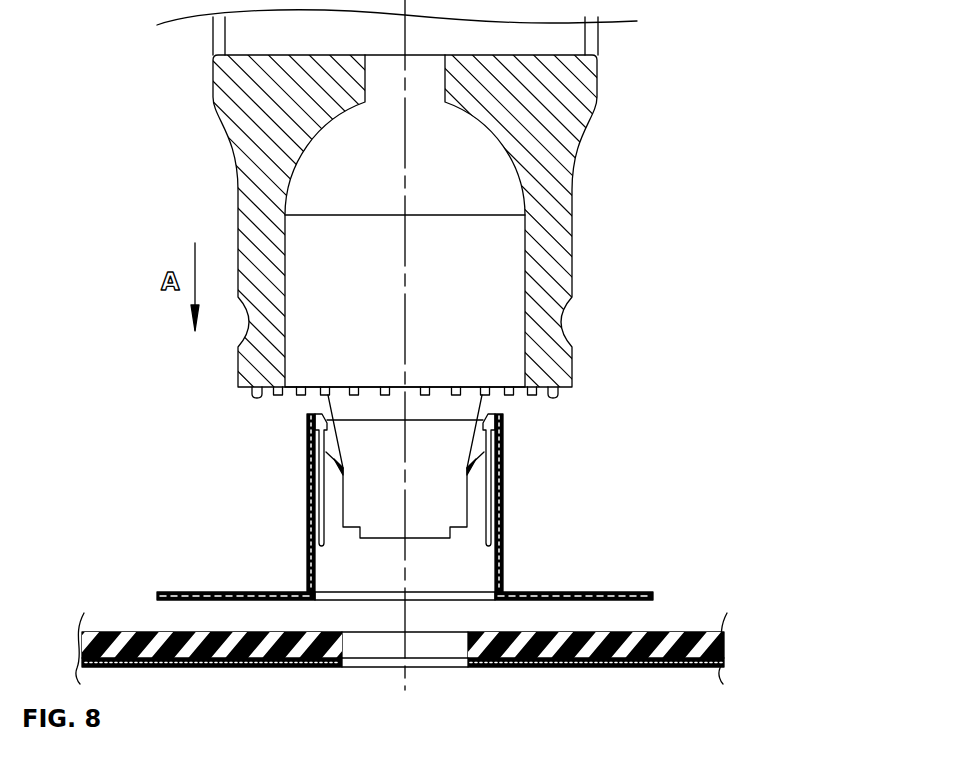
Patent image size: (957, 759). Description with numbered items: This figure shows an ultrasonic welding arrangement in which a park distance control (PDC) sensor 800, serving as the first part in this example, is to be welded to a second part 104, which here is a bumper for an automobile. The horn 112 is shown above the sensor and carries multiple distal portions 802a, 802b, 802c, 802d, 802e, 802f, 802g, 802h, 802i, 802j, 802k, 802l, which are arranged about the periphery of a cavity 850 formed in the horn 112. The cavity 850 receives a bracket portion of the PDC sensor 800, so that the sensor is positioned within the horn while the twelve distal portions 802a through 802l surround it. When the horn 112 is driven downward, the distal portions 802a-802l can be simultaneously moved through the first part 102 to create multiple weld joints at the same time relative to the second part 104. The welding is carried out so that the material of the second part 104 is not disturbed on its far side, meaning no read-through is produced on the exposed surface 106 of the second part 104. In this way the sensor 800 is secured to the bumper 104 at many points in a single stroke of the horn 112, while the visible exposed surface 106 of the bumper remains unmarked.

The horn 112 is at (575, 167).
The cavity 850 is at (400, 153).
The distal portion 802a is at (273, 398).
The distal portion 802b is at (293, 395).
The distal portion 802c is at (298, 395).
The distal portion 802d is at (328, 395).
The distal portion 802e is at (354, 395).
The distal portion 802f is at (385, 395).
The distal portion 802g is at (425, 395).
The distal portion 802h is at (456, 395).
The distal portion 802i is at (482, 395).
The distal portion 802j is at (515, 395).
The distal portion 802k is at (537, 397).
The distal portion 802l is at (555, 398).
The park distance control (PDC) sensor 800 is at (505, 548).
The first part 102 is at (612, 592).
The second part 104 is at (718, 644).
The exposed surface 106 is at (680, 667).